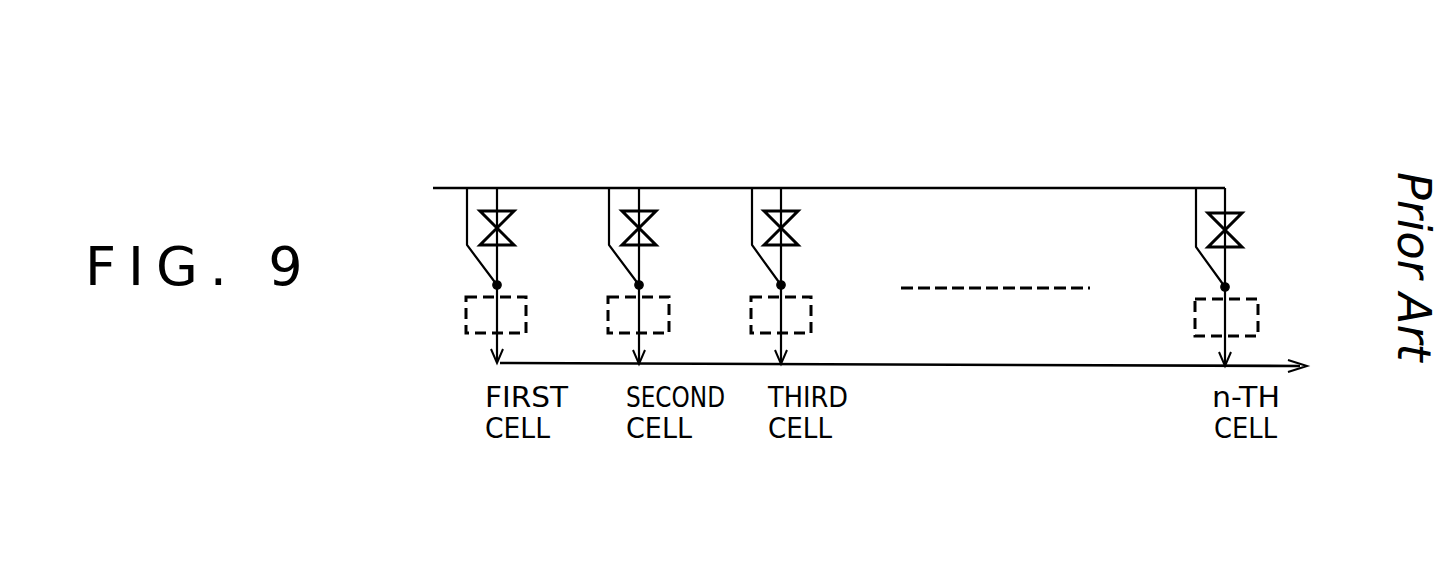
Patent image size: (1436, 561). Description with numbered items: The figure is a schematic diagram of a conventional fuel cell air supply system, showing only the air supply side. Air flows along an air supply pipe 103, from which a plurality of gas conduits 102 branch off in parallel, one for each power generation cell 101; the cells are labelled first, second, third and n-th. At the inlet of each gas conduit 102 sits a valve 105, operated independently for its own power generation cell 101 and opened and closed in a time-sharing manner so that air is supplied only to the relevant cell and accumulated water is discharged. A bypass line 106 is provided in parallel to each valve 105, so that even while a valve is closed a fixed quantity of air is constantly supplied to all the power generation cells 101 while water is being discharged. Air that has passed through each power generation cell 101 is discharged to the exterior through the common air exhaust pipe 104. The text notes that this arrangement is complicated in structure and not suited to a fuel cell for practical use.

The power generation cell 101 is at (462, 320).
The gas conduit 102 is at (492, 303).
The air supply pipe 103 is at (480, 188).
The air exhaust pipe 104 is at (523, 364).
The valve 105 is at (514, 215).
The bypass line 106 is at (467, 210).